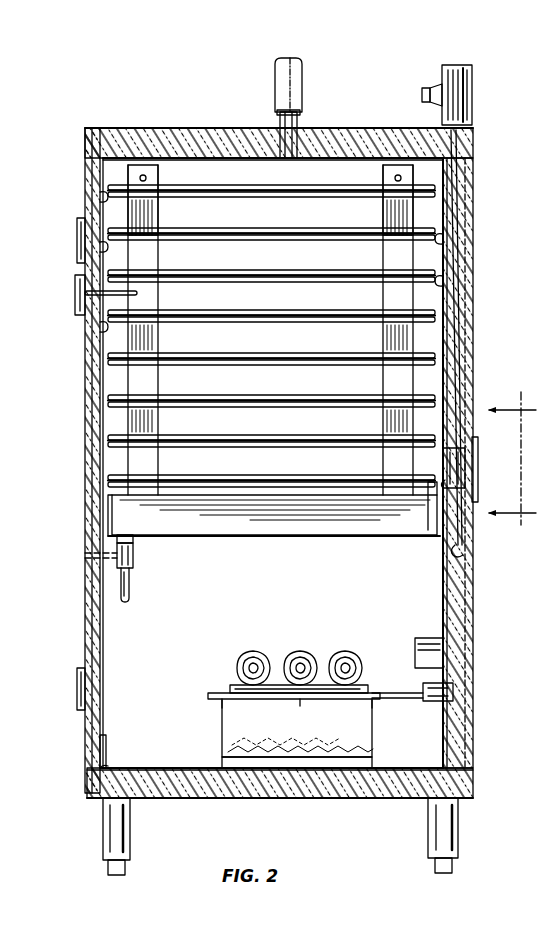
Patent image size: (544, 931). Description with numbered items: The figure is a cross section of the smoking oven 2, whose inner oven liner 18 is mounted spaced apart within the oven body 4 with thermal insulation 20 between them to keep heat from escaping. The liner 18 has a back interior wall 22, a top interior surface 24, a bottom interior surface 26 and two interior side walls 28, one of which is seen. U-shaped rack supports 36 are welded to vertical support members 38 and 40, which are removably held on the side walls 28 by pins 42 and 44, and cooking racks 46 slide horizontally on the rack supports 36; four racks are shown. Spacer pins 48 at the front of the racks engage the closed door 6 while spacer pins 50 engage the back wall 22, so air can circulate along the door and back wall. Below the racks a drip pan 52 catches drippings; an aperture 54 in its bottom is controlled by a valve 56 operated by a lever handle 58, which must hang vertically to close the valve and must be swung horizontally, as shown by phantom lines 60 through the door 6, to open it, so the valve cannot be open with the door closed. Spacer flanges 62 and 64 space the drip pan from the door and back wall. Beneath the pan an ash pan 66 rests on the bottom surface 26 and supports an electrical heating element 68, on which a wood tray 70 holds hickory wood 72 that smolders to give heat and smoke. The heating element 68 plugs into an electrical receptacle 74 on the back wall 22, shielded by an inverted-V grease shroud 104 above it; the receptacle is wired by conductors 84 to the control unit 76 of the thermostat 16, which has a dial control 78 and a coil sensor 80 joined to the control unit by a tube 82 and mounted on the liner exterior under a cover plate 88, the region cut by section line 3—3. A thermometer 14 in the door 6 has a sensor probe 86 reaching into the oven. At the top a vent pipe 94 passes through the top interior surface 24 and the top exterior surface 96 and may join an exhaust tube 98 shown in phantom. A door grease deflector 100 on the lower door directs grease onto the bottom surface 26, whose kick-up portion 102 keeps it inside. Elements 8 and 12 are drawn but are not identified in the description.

The oven 2 is at (105, 78).
The section line 3— 3 is at (512, 459).
The oven body 4 is at (475, 575).
The door 6 is at (85, 385).
The hinges 8 is at (77, 238).
The legs 12 is at (103, 828).
The thermometer 14 is at (75, 295).
The thermostat 16 is at (476, 75).
The inner oven liner 18 is at (441, 573).
The thermal insulation 20 is at (470, 742).
The back interior wall 22 is at (458, 560).
The top interior surface 24 is at (368, 160).
The bottom interior surface 26 is at (382, 790).
The interior side walls 28 is at (265, 607).
The rack supports 36 is at (328, 312).
The vertical support member 38 is at (160, 180).
The vertical support member 40 is at (383, 178).
The pin 42 is at (140, 178).
The pin 44 is at (401, 178).
The cooking racks 46 is at (280, 186).
The spacer pins 48 is at (100, 197).
The spacer pins 50 is at (443, 239).
The drip pan 52 is at (290, 540).
The aperture 54 is at (125, 535).
The valve 56 is at (135, 556).
The lever handle 58 is at (130, 600).
The phantom lines 60 is at (80, 562).
The spacer flange 62 is at (108, 492).
The spacer flange 64 is at (428, 512).
The ash pan 66 is at (220, 716).
The electrical heating element 68 is at (395, 700).
The wood tray 70 is at (228, 680).
The hickory wood 72 is at (348, 652).
The electrical receptacle 74 is at (425, 688).
The control unit 76 is at (447, 70).
The dial control 78 is at (422, 95).
The coil sensor 80 is at (441, 455).
The tube 82 is at (462, 405).
The conductors 84 is at (468, 640).
The sensor probe 86 is at (137, 293).
The cover plate 88 is at (478, 452).
The vent pipe 94 is at (280, 125).
The top exterior surface 96 is at (176, 128).
The exhaust tube 98 is at (305, 72).
The door grease deflector 100 is at (106, 740).
The kick-up portion 102 is at (108, 766).
The grease shroud 104 is at (428, 638).